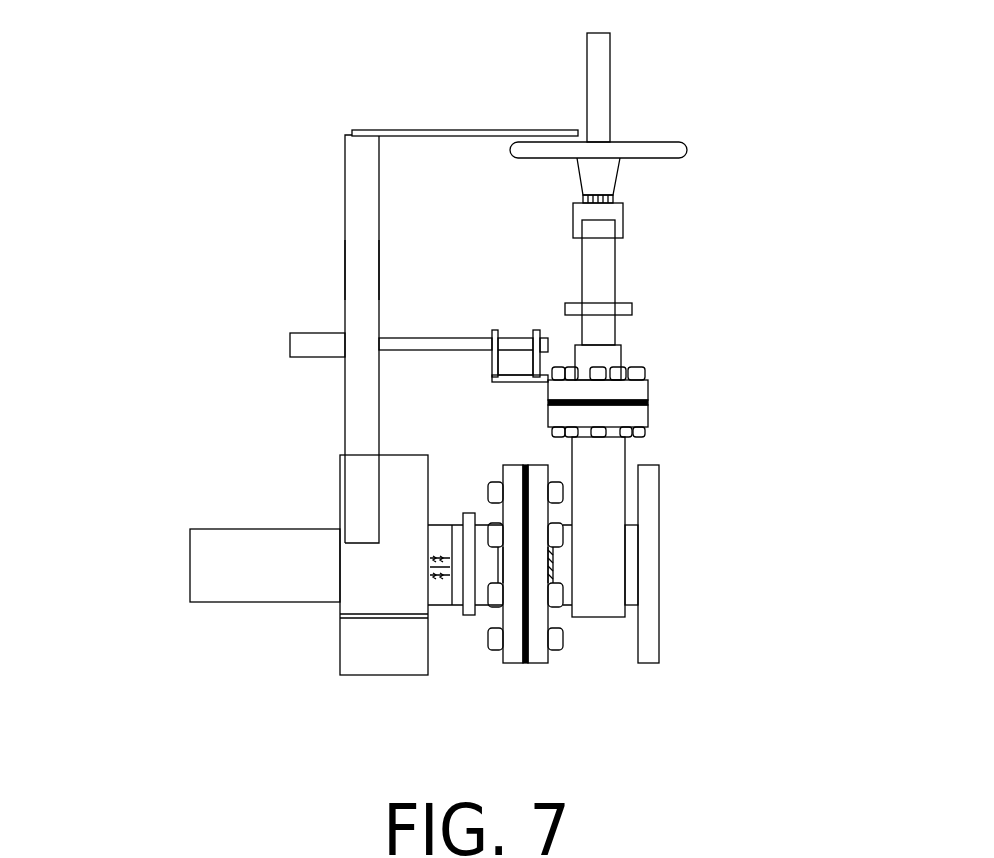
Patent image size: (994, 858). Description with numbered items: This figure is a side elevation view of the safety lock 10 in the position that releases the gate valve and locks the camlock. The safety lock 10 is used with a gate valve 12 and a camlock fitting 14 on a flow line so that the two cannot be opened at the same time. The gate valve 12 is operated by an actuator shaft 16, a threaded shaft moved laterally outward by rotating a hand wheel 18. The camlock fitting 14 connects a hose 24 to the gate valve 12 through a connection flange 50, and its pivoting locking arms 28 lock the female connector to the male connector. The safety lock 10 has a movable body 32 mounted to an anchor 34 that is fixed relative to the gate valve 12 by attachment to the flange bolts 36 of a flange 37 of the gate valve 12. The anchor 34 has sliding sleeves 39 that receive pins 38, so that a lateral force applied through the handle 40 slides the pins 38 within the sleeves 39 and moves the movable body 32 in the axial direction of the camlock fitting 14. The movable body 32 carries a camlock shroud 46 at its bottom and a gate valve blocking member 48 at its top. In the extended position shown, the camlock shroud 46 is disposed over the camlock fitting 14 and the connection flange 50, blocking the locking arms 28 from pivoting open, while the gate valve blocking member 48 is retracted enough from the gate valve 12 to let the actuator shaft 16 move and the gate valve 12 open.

The safety lock 10 is at (363, 205).
The gate valve 12 is at (590, 533).
The camlock fitting 14 is at (465, 603).
The actuator shaft 16 is at (602, 75).
The hand wheel 18 is at (650, 152).
The hose 24 is at (218, 583).
The locking arms 28 is at (428, 563).
The movable body 32 is at (362, 287).
The anchor 34 is at (493, 375).
The flange bolts 36 is at (643, 370).
The flange 37 is at (593, 413).
The pins 38 is at (463, 345).
The sliding sleeves 39 is at (510, 343).
The handle 40 is at (297, 347).
The camlock shroud 46 is at (345, 663).
The gate valve blocking member 48 is at (432, 133).
The connection flange 50 is at (520, 585).